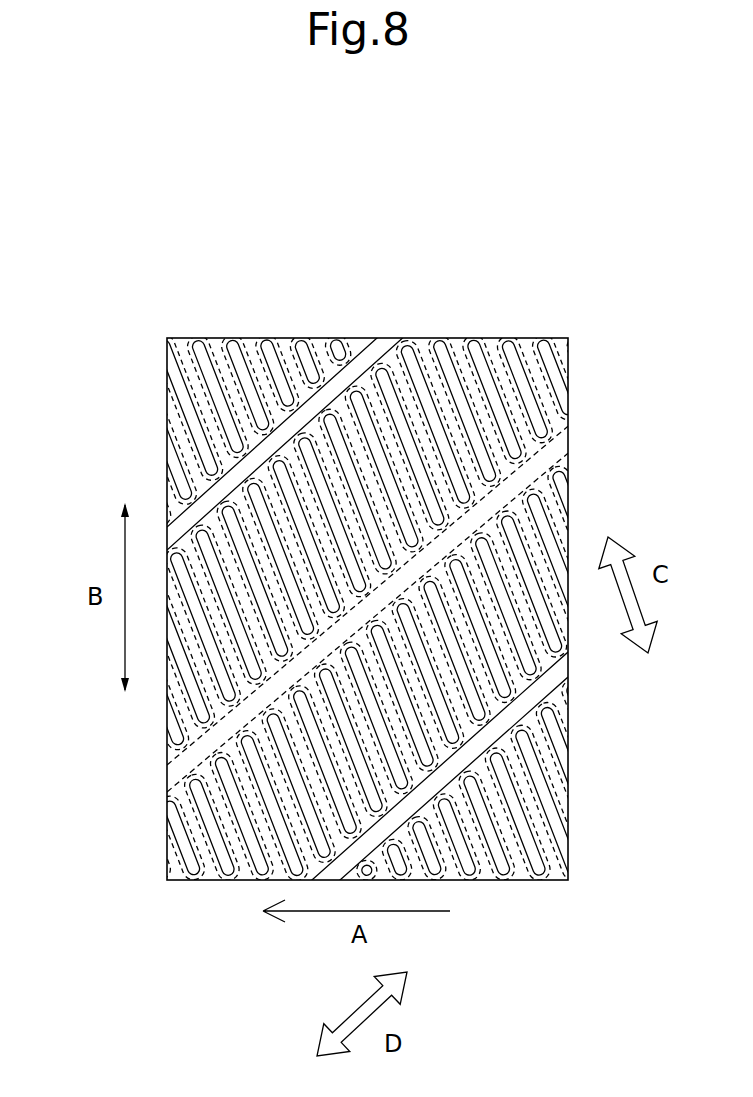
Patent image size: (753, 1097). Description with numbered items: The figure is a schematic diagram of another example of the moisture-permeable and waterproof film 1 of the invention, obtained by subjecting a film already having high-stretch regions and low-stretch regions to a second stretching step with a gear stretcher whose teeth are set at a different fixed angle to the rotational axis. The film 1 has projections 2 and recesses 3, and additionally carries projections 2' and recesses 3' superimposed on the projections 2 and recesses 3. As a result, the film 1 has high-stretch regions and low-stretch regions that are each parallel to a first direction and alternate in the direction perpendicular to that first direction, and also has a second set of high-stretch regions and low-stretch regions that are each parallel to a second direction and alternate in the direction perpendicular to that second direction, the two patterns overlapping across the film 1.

The moisture-permeable and waterproof film 1 is at (133, 278).
The projections 2 is at (376, 607).
The projections 2' is at (367, 600).
The recesses 3 is at (376, 607).
The recesses 3' is at (416, 574).